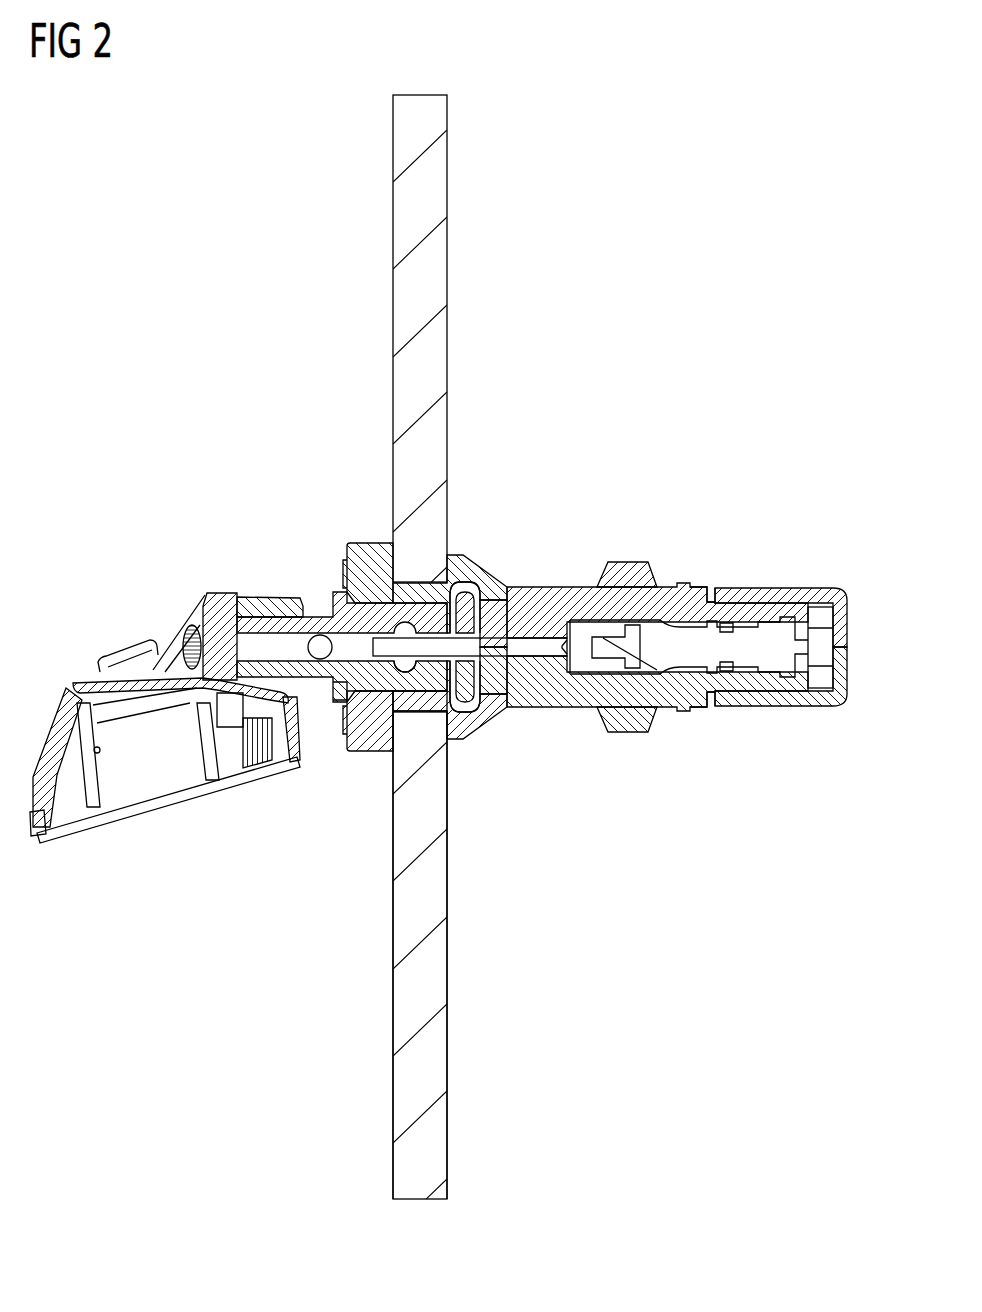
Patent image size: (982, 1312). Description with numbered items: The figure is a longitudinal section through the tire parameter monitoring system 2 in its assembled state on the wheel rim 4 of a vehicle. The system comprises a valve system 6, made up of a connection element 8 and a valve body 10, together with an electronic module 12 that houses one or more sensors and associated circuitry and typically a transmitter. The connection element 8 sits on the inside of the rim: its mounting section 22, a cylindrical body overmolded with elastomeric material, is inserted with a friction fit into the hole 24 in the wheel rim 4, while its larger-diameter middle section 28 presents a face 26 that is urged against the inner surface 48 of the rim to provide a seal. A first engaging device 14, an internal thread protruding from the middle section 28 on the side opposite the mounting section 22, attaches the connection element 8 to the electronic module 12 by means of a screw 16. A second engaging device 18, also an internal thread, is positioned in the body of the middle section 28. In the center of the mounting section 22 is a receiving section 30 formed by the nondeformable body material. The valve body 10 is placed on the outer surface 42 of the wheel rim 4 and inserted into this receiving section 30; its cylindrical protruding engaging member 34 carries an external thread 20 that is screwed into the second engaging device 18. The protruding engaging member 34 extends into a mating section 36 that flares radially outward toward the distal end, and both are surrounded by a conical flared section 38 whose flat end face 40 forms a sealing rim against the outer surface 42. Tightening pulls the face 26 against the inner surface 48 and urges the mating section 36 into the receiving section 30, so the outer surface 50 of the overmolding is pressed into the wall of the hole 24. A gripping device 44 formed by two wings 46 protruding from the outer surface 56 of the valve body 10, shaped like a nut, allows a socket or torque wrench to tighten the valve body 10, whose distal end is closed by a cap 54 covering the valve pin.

The tire parameter monitoring system 2 is at (228, 380).
The wheel rim 4 is at (428, 270).
The valve system 6 is at (488, 547).
The connection element 8 is at (363, 521).
The valve body 10 is at (713, 535).
The electronic module 12 is at (57, 683).
The first engaging device 14 is at (305, 631).
The screw 16 is at (203, 620).
The second engaging device 18 is at (326, 702).
The external thread 20 is at (380, 660).
The mounting section 22 is at (455, 772).
The hole 24 is at (410, 563).
The face 26 is at (398, 547).
The middle section 28 is at (343, 762).
The receiving section 30 is at (497, 592).
The protruding engaging member 34 is at (424, 717).
The mating section 36 is at (478, 630).
The flared section 38 is at (495, 722).
The flat end face 40 is at (462, 748).
The outer surface 42 is at (447, 892).
The gripping device 44 is at (665, 738).
The wings 46 is at (645, 562).
The inner surface 48 is at (393, 927).
The outer surface of the overmolding 50 is at (453, 573).
The cap 54 is at (836, 585).
The outer surface of the valve body 56 is at (702, 710).